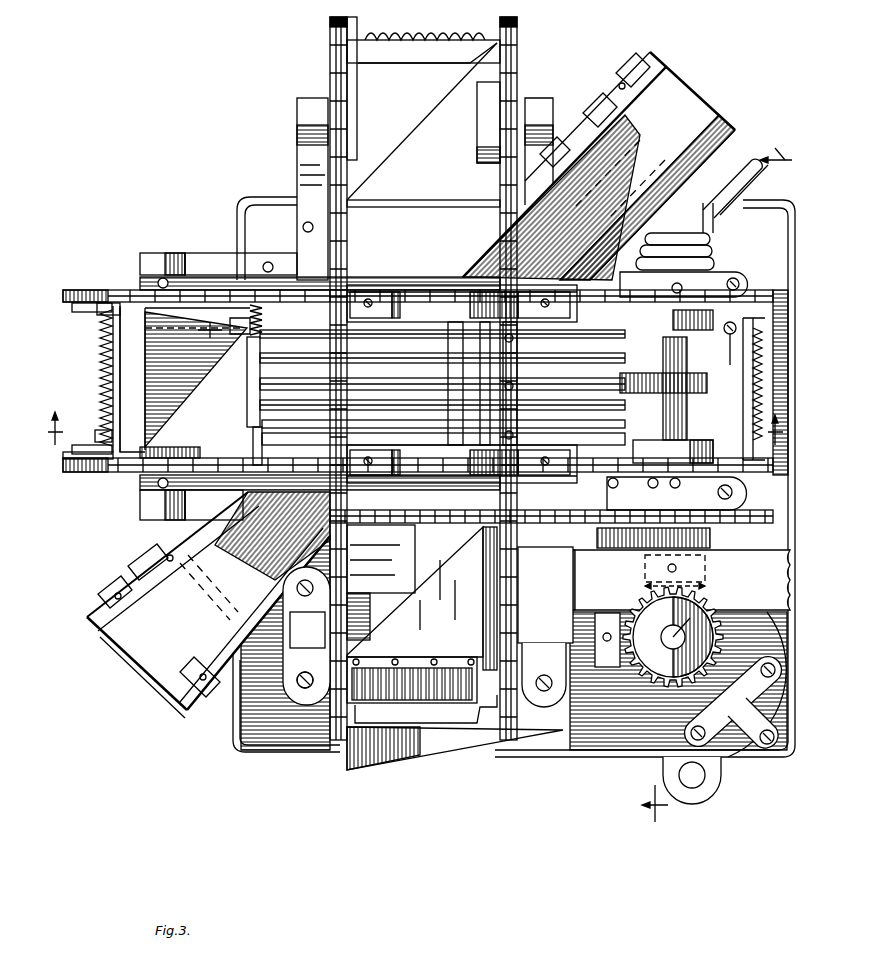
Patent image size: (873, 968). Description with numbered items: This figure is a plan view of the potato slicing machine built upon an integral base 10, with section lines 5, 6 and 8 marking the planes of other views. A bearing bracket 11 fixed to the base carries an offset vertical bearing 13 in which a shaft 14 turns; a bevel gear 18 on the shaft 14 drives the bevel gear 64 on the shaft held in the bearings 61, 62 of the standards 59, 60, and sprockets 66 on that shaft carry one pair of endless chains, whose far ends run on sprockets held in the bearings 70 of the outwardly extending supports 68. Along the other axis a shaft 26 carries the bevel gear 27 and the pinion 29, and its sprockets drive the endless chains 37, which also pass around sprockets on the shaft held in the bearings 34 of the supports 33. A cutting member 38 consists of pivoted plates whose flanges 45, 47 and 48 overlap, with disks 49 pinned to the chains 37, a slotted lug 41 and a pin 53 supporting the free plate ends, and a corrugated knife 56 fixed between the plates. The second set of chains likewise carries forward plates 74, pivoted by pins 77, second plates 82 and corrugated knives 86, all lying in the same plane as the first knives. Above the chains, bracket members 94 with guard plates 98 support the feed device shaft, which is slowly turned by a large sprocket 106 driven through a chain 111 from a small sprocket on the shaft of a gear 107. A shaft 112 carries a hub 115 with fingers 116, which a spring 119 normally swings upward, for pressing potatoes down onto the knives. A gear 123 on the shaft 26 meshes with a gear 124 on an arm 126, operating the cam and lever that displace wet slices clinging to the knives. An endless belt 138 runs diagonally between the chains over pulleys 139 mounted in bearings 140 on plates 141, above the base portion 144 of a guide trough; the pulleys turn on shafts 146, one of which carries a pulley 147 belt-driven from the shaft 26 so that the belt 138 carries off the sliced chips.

The section line 5- 5 is at (717, 492).
The section line 6- 6 is at (405, 422).
The section line 8 is at (210, 331).
The base 10 is at (570, 746).
The bearing bracket 11 is at (735, 752).
The bearing 13 is at (760, 622).
The shaft 14 is at (728, 612).
The bevel gear 18 is at (673, 637).
The shaft 26 is at (743, 428).
The bevel gear 27 is at (645, 586).
The pinion 29 is at (705, 594).
The supports 33 is at (208, 262).
The bearings 34 is at (160, 262).
The endless chains 37 is at (86, 290).
The cutting member 38 is at (95, 433).
The lug 41 is at (200, 314).
The short flange 45 is at (140, 432).
The flange 47 is at (85, 452).
The flange 48 is at (82, 310).
The disks 49 is at (70, 458).
The pin 53 is at (102, 316).
The knife 56 is at (97, 379).
The standard 59 is at (295, 684).
The standard 60 is at (602, 748).
The bearing 61 is at (306, 636).
The bearing 62 is at (545, 627).
The bevel gear 64 is at (607, 640).
The sprockets 66 is at (365, 600).
The supports 68 is at (298, 162).
The bearings 70 is at (300, 100).
The forward plate 74 is at (405, 768).
The pins 77 is at (356, 712).
The second plate 82 is at (422, 598).
The corrugated knife 86 is at (444, 705).
The bearing bracket members 94 is at (415, 292).
The guard plate 98 is at (460, 383).
The sprocket 106 is at (380, 530).
The gear 107 is at (645, 566).
The chain 111 is at (597, 536).
The shaft 112 is at (253, 442).
The hub 115 is at (258, 402).
The fingers 116 is at (300, 428).
The spring 119 is at (254, 350).
The gear 123 is at (700, 333).
The gear 124 is at (640, 395).
The arm 126 is at (687, 406).
The endless belt 138 is at (208, 601).
The pulleys 139 is at (665, 58).
The bearings 140 is at (625, 74).
The plates 141 is at (592, 110).
The base portion 144 is at (185, 600).
The shafts 146 is at (757, 158).
The pulley 147 is at (772, 160).